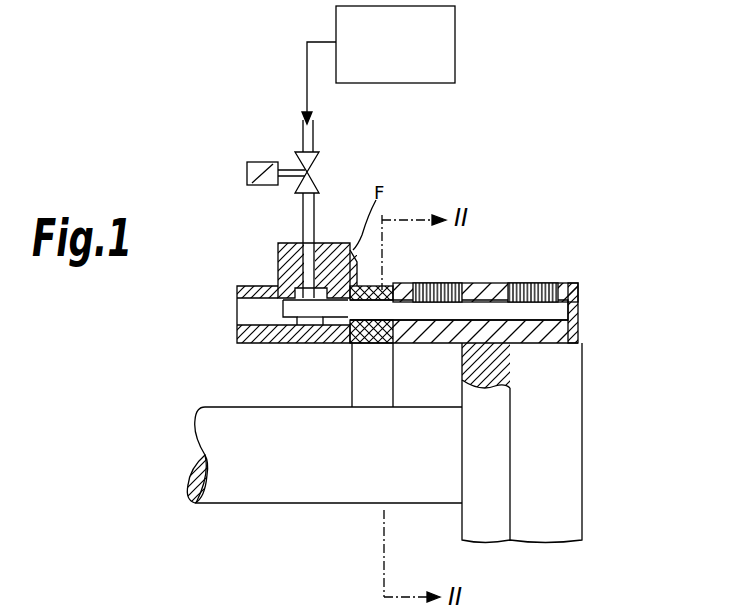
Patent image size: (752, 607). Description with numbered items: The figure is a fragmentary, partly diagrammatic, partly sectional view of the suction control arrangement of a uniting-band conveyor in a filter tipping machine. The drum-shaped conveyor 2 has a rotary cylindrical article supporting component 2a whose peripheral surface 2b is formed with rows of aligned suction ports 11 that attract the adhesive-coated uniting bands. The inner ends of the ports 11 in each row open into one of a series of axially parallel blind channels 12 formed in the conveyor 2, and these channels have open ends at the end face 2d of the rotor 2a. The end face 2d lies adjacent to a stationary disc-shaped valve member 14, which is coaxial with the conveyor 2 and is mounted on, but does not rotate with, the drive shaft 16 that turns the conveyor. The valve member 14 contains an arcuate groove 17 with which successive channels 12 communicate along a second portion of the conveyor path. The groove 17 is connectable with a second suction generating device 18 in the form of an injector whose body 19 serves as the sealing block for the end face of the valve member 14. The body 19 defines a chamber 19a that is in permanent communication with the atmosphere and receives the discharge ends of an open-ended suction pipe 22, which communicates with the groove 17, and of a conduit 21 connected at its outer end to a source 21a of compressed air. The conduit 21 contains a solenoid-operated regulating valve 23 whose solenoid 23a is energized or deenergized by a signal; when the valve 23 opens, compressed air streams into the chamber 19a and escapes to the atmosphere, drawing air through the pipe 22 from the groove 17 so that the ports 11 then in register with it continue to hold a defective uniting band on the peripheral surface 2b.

The drum-shaped conveyor 2 is at (588, 400).
The rotary cylindrical article supporting component 2a is at (572, 326).
The peripheral surface 2b is at (571, 283).
The end face 2d is at (381, 344).
The suction ports 11 is at (542, 283).
The channels 12 is at (555, 312).
The valve member 14 is at (375, 286).
The drive shaft 16 is at (258, 483).
The groove 17 is at (353, 344).
The second suction generating device 18 is at (252, 257).
The body 19 is at (289, 243).
The chamber 19a is at (241, 314).
The conduit 21 is at (316, 224).
The source of compressed air 21a is at (455, 50).
The suction pipe 22 is at (275, 343).
The regulating valve 23 is at (318, 171).
The solenoid 23a is at (253, 162).